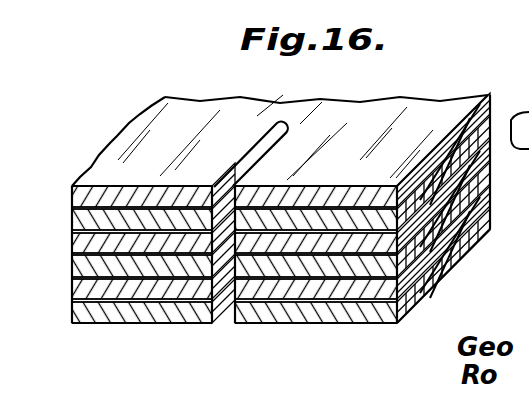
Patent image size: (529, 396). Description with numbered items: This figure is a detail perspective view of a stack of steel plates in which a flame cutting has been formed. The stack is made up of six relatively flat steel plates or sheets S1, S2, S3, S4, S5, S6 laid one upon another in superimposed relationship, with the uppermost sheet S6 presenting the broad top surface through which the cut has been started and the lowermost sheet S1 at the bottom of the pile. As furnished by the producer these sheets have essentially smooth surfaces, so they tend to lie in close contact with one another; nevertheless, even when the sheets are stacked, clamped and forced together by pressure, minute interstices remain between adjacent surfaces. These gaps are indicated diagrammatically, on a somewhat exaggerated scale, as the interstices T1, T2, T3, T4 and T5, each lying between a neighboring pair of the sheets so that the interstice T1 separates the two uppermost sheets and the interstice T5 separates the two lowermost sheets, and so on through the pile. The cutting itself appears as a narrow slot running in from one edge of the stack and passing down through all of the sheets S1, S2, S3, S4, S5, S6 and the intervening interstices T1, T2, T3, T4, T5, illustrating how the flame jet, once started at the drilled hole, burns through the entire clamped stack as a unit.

The steel plate S1 is at (490, 228).
The steel plate S2 is at (490, 203).
The steel plate S3 is at (490, 186).
The steel plate S4 is at (490, 170).
The steel plate S5 is at (490, 137).
The steel plate S6 is at (490, 97).
The interstice T1 is at (82, 208).
The interstice T2 is at (82, 231).
The interstice T3 is at (82, 255).
The interstice T4 is at (82, 278).
The interstice T5 is at (82, 300).